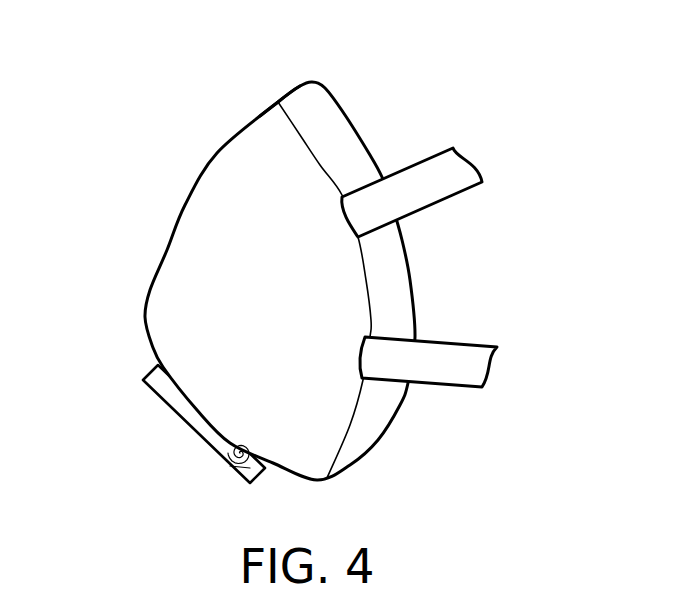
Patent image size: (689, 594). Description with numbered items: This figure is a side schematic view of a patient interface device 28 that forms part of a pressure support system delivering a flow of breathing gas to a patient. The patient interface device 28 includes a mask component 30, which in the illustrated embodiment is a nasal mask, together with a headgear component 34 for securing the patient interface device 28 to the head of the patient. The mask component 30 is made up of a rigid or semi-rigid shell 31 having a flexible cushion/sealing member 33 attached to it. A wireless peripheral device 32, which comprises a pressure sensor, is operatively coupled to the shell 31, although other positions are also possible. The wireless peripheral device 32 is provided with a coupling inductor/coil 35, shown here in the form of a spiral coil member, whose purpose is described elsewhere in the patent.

The patient interface device 28 is at (155, 132).
The mask component 30 is at (278, 102).
The shell 31 is at (177, 250).
The wireless peripheral device 32 is at (175, 415).
The cushion/sealing member 33 is at (343, 135).
The headgear component 34 is at (427, 192).
The coupling inductor/coil 35 is at (230, 463).